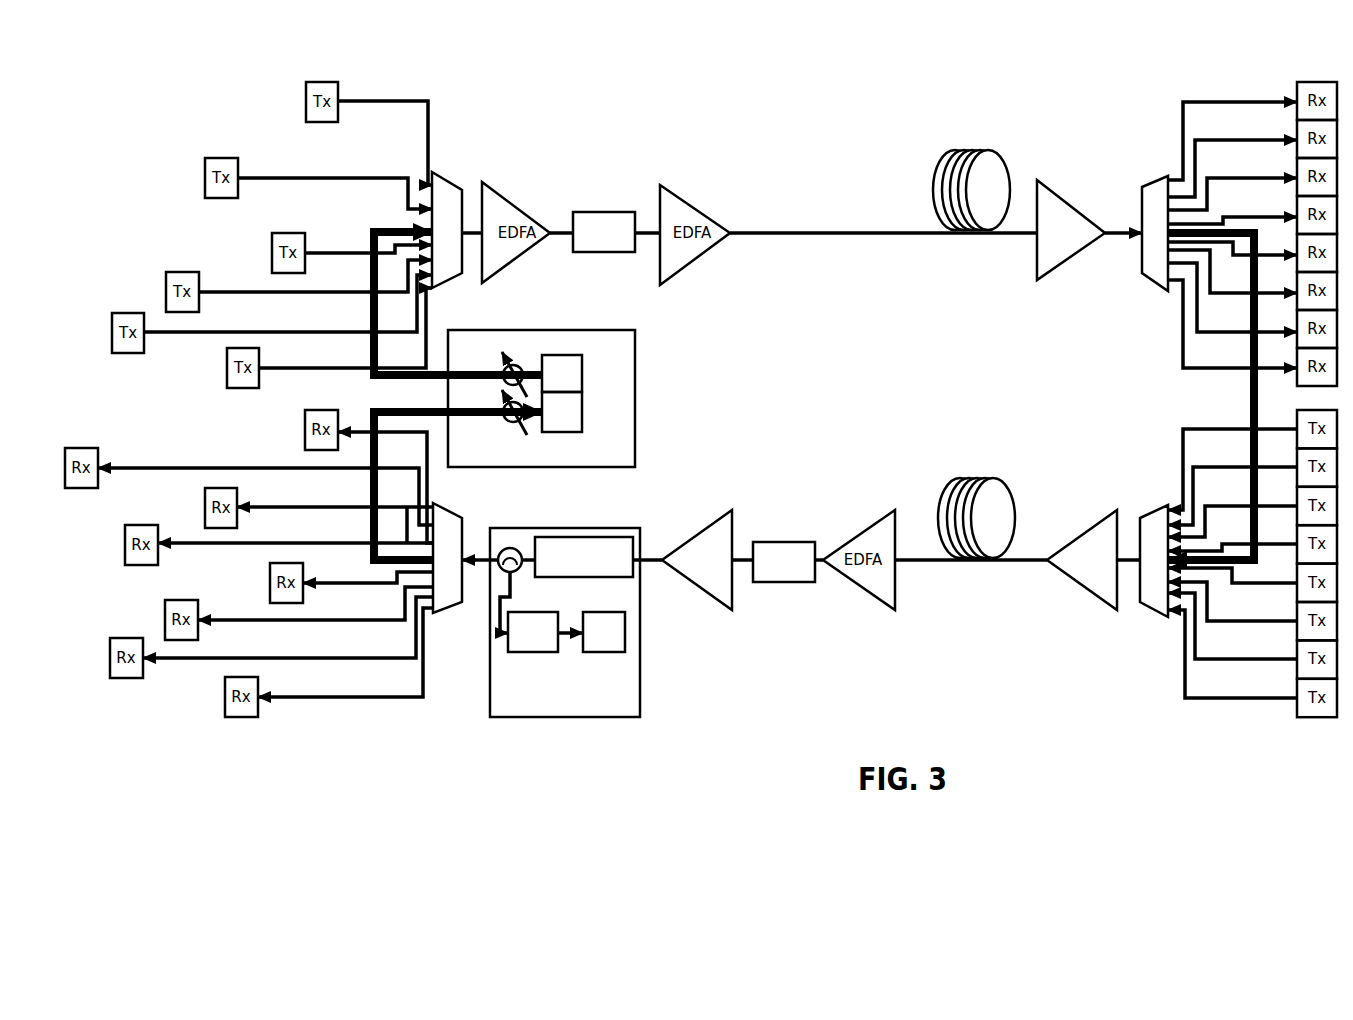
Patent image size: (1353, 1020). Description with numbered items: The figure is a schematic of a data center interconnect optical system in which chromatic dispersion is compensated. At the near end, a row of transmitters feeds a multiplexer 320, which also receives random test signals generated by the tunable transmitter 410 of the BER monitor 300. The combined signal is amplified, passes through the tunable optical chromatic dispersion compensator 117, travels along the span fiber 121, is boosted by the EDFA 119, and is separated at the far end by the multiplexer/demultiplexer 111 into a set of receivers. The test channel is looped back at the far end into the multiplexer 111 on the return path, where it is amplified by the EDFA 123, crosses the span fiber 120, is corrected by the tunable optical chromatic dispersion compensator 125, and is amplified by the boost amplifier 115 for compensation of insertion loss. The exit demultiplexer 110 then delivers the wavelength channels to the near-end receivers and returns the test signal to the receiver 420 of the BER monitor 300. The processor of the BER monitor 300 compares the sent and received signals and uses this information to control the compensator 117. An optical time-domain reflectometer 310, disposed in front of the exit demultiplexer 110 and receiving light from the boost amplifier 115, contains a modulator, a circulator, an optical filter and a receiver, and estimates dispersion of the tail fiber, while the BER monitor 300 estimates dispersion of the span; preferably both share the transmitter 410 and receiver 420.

The demultiplexer 110 is at (443, 615).
The multiplexer 111 is at (1167, 168).
The amplifier 115 is at (732, 610).
The tunable optical chromatic dispersion compensator 117 is at (592, 211).
The EDFA 119 is at (1070, 257).
The span fiber 120 is at (977, 563).
The span fiber 121 is at (973, 235).
The EDFA 123 is at (1095, 597).
The tunable optical chromatic dispersion compensator 125 is at (775, 540).
The BER monitor 300 is at (635, 400).
The optical time-domain reflectometer 310 is at (640, 680).
The multiplexer 320 is at (390, 228).
The tunable transmitter 410 is at (582, 368).
The receiver 420 is at (582, 423).